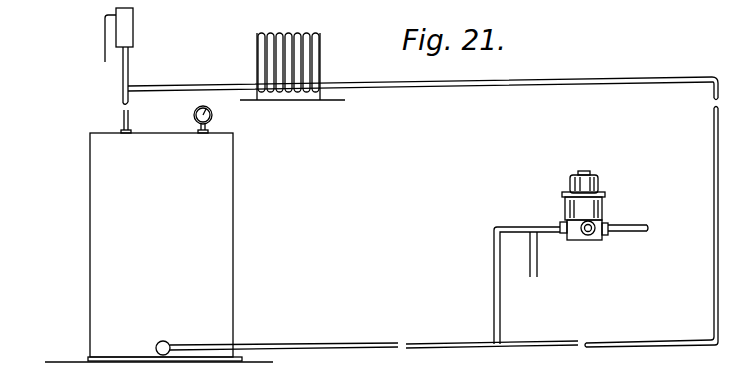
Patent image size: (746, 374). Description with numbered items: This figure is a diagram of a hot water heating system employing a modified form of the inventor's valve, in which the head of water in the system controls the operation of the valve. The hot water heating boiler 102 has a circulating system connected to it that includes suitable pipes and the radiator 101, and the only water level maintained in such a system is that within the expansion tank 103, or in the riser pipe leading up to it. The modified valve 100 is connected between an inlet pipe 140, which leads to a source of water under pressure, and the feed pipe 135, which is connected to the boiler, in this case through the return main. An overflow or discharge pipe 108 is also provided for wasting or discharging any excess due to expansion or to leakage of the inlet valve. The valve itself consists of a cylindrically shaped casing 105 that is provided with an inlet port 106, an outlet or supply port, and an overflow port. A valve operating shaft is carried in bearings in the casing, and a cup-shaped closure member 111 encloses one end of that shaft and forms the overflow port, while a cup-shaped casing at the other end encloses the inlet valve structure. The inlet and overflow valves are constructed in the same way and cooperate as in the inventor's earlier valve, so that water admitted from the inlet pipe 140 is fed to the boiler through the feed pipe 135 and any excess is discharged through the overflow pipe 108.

The modified valve 100 is at (614, 209).
The radiator 101 is at (322, 38).
The hot water heating boiler 102 is at (222, 174).
The expansion tank 103 is at (135, 27).
The cylindrically shaped casing 105 is at (605, 203).
The inlet port 106 is at (603, 236).
The overflow or discharge pipe 108 is at (533, 258).
The cup-shaped closure member 111 is at (587, 238).
The feed pipe 135 is at (502, 230).
The inlet pipe 140 is at (623, 232).